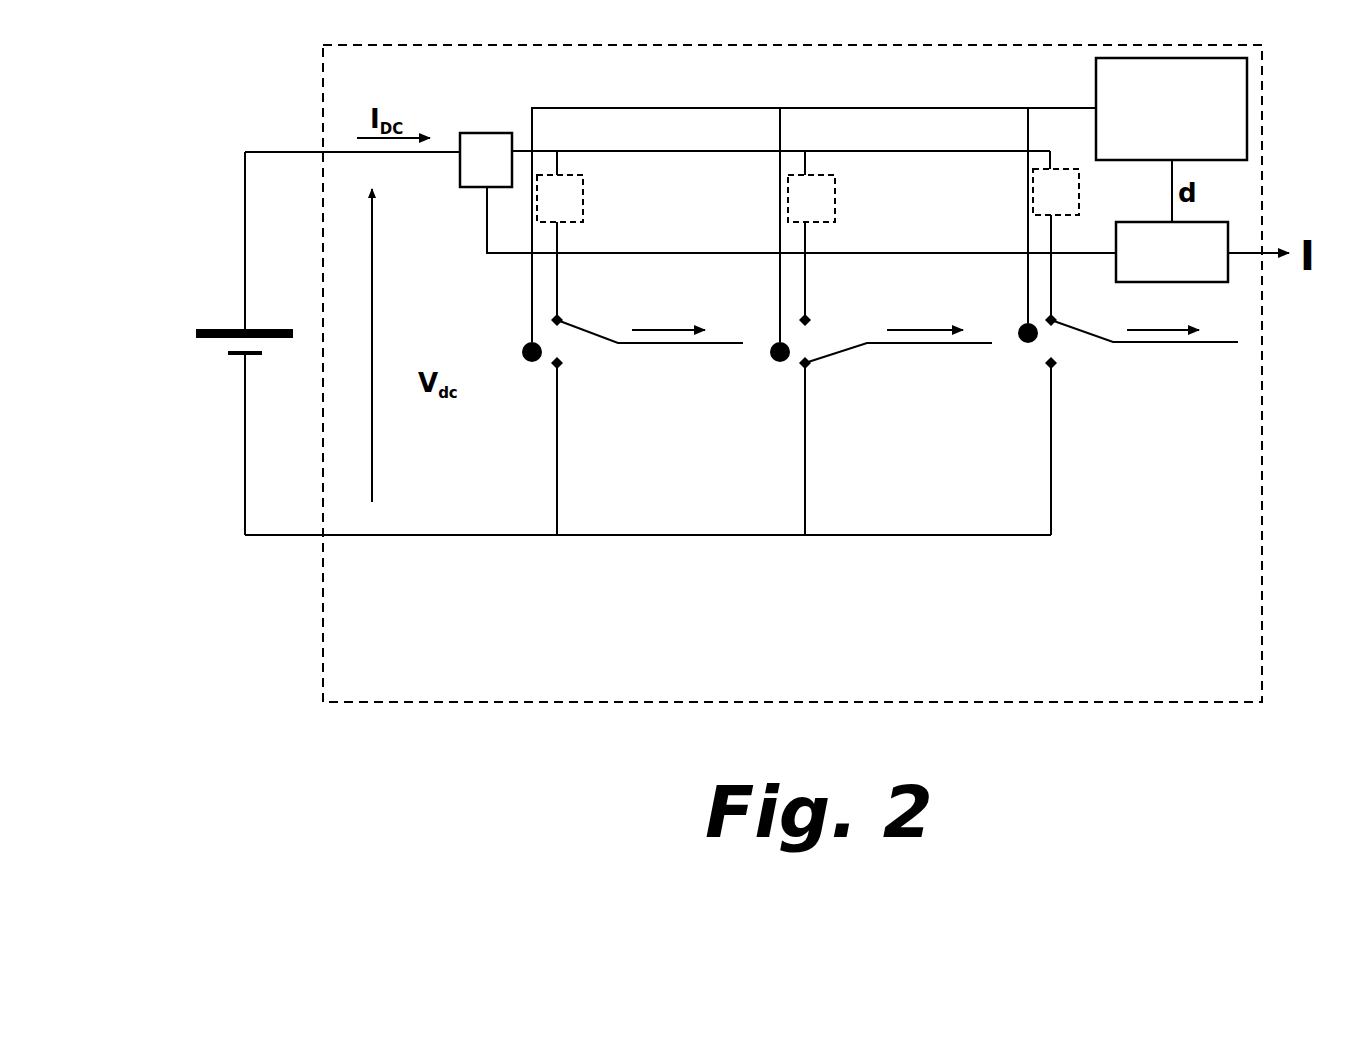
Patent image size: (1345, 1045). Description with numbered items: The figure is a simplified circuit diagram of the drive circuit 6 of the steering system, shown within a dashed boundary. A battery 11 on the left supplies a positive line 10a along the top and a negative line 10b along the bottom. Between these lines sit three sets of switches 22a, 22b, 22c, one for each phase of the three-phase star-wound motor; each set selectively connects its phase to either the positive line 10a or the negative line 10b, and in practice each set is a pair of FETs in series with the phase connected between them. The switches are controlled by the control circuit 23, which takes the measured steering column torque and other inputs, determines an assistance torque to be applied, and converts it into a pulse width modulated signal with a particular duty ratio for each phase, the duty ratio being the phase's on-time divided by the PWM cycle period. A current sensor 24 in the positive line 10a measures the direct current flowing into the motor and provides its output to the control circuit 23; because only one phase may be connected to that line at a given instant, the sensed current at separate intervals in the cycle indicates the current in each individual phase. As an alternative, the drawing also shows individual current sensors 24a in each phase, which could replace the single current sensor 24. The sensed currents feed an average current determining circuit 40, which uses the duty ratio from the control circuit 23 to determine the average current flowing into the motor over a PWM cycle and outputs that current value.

The converter unit 6 is at (632, 701).
The positive line 10a is at (285, 150).
The negative line 10b is at (253, 609).
The battery 11 is at (217, 385).
The first set of switches 22a is at (632, 415).
The second set of switches 22b is at (881, 415).
The third set of switches 22c is at (1128, 415).
The control circuit 23 is at (889, 200).
The current sensor 24 is at (788, 193).
The individual current sensor 24a is at (808, 235).
The average current determining circuit 40 is at (1202, 252).